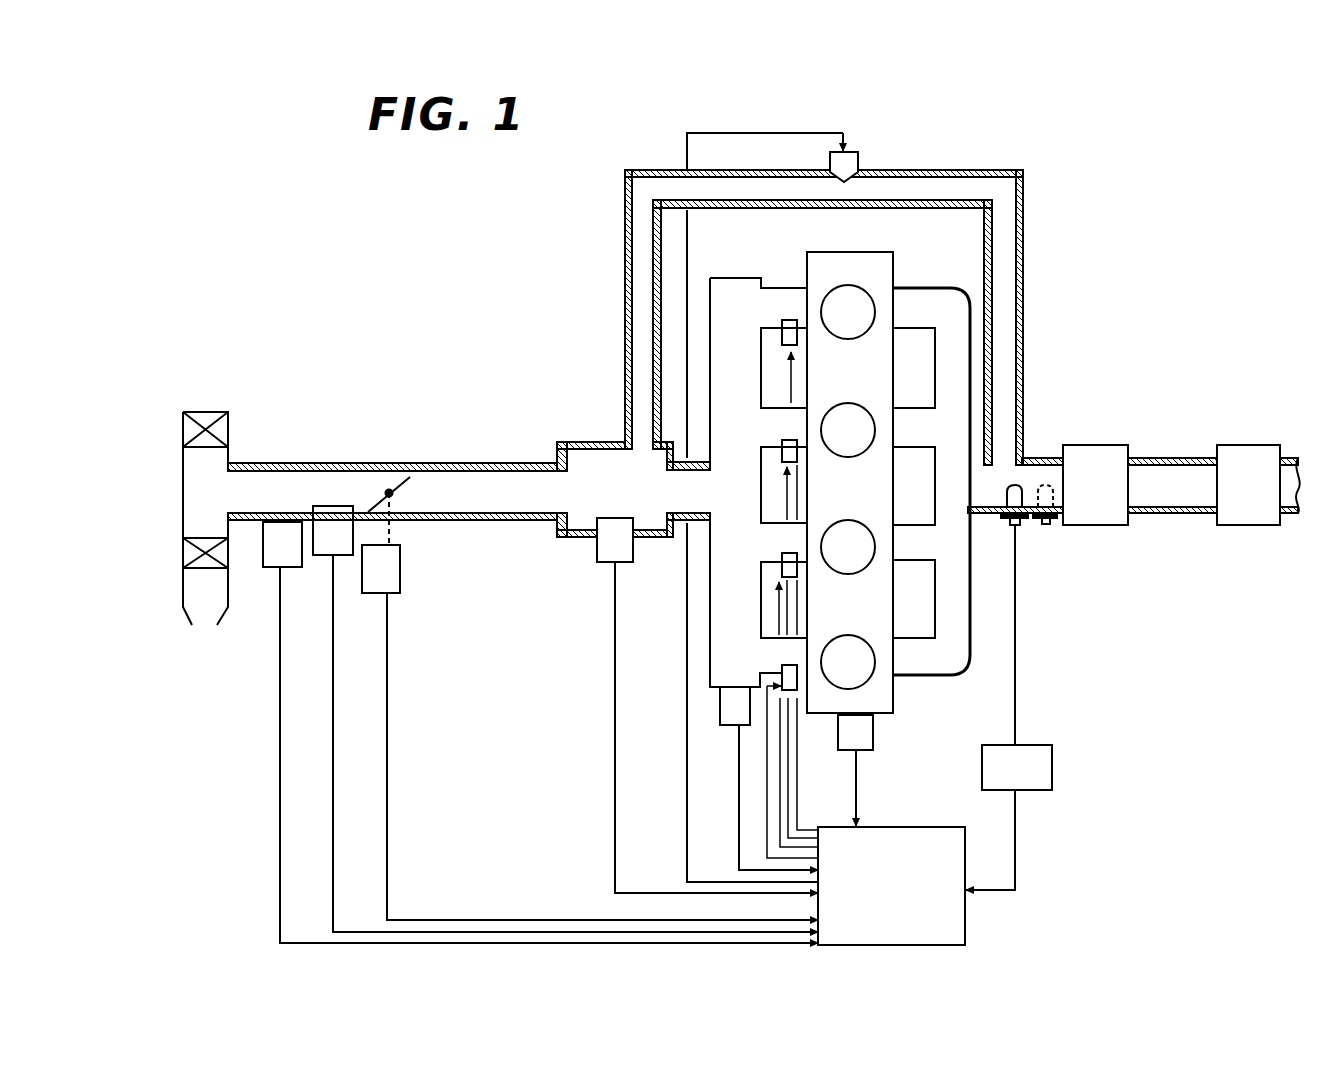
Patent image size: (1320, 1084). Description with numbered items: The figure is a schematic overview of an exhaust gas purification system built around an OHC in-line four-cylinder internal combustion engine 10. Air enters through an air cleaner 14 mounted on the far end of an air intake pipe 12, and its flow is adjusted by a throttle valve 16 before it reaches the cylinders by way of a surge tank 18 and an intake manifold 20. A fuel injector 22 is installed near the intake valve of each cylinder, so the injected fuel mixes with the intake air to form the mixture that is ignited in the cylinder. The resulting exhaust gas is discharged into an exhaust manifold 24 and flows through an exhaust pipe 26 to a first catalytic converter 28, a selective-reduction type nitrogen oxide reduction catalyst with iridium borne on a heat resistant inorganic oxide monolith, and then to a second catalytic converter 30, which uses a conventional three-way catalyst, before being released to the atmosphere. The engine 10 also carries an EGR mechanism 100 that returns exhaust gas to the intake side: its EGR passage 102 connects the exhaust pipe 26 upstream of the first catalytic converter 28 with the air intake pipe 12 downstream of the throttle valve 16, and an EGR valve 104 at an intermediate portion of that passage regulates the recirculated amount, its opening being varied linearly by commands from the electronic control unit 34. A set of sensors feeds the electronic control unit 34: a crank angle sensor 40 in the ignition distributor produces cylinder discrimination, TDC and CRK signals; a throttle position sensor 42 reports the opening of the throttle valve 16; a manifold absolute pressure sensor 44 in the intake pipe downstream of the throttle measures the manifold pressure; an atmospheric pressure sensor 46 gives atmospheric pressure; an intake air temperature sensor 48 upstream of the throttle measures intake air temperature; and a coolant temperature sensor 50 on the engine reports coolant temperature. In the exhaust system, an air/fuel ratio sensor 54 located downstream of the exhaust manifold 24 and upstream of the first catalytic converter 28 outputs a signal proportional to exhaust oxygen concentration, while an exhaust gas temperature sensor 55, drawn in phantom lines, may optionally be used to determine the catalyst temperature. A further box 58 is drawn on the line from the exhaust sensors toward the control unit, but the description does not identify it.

The internal combustion engine 10 is at (930, 281).
The air intake pipe 12 is at (265, 463).
The air cleaner 14 is at (227, 613).
The throttle valve 16 is at (408, 487).
The surge tank 18 is at (593, 442).
The intake manifold 20 is at (733, 278).
The fuel injector 22 is at (797, 335).
The exhaust manifold 24 is at (968, 302).
The exhaust pipe 26 is at (1038, 457).
The first catalytic converter 28 is at (1100, 444).
The second catalytic converter 30 is at (1240, 444).
The electronic control unit (ECU) 34 is at (902, 825).
The crank angle sensor 40 is at (865, 730).
The throttle position sensor 42 is at (400, 577).
The manifold absolute pressure sensor 44 is at (607, 563).
The atmospheric pressure sensor 46 is at (270, 568).
The intake air temperature sensor 48 is at (343, 557).
The coolant temperature sensor 50 is at (725, 725).
The air/fuel ratio sensor 54 is at (1018, 525).
The exhaust gas temperature sensor 55 is at (1045, 523).
The heater control unit 58 is at (1052, 768).
The EGR mechanism 100 is at (928, 166).
The EGR passage 102 is at (967, 168).
The EGR valve 104 is at (830, 163).